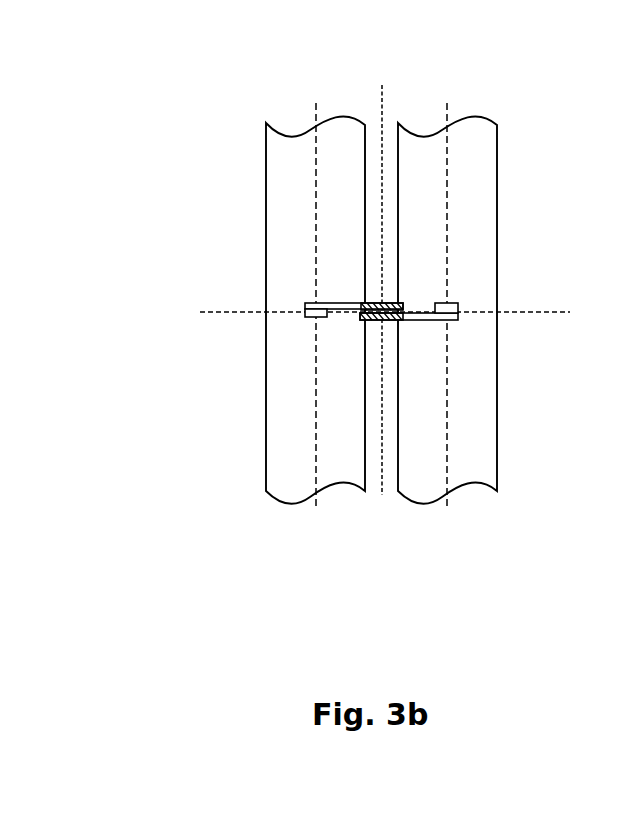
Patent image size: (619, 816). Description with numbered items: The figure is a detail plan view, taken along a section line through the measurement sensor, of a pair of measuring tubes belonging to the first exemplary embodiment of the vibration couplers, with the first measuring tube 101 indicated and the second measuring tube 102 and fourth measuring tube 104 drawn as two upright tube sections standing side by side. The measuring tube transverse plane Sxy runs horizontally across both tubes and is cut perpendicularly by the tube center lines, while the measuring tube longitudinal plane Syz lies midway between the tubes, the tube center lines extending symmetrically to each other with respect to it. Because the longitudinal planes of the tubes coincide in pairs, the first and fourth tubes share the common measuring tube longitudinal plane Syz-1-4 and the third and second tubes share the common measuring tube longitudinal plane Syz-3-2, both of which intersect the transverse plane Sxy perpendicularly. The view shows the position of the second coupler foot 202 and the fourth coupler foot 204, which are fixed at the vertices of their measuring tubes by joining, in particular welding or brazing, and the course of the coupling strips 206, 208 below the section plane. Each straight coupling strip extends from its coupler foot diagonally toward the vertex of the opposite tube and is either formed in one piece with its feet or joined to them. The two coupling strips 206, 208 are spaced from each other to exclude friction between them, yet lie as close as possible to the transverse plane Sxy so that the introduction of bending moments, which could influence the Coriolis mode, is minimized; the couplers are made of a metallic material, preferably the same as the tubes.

The first measuring tube 101 is at (389, 308).
The second measuring tube 102 is at (487, 430).
The fourth measuring tube 104 is at (277, 432).
The second coupler foot 202 is at (446, 303).
The fourth coupler foot 204 is at (307, 317).
The coupling strip 206 is at (370, 321).
The coupling strip 208 is at (387, 303).
The measuring tube longitudinal plane Syz is at (381, 102).
The measuring tube transverse plane Sxy is at (237, 312).
The common measuring tube longitudinal plane of the first and fourth measuring tubes Syz-1-4 is at (317, 466).
The common measuring tube longitudinal plane of the third and second measuring tubes Syz-3-2 is at (447, 464).